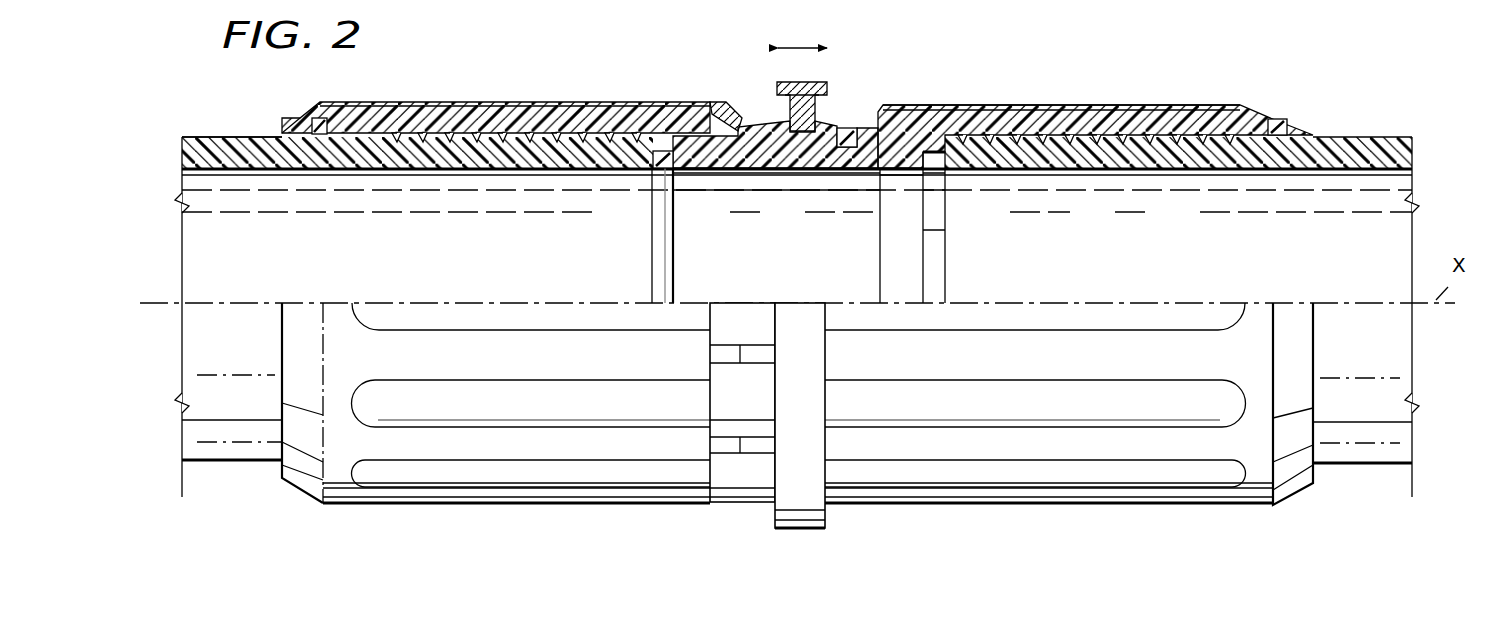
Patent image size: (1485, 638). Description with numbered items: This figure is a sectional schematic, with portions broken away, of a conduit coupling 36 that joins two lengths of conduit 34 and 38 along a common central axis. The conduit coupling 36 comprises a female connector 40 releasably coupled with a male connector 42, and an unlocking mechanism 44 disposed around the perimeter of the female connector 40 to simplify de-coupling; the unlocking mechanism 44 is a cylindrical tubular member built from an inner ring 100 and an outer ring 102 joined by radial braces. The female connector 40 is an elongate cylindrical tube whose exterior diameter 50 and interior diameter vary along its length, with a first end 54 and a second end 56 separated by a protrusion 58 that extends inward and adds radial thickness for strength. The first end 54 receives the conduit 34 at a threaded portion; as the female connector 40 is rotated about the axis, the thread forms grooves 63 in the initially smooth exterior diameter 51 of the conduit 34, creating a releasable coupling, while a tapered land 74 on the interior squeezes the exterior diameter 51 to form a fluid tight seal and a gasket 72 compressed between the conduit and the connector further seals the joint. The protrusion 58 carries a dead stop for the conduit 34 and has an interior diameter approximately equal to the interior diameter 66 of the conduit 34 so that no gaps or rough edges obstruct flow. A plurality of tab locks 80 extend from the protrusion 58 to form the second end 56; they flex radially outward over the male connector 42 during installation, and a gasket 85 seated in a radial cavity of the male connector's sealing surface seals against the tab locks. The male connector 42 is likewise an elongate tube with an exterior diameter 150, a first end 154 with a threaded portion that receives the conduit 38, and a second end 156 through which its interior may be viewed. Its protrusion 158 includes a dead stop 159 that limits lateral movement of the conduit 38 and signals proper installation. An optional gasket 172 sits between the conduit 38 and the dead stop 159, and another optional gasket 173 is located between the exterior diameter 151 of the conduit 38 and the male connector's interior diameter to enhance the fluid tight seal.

The conduit 34 is at (1373, 349).
The conduit coupling 36 is at (982, 60).
The conduit 38 is at (248, 349).
The female connector 40 is at (954, 364).
The male connector 42 is at (596, 364).
The unlocking mechanism 44 is at (800, 531).
The exterior diameter 50 is at (1112, 105).
The exterior diameter 51 is at (1355, 136).
The first end 54 is at (1298, 503).
The second end 56 is at (900, 506).
The protrusion 58 is at (896, 172).
The grooves 63 is at (991, 150).
The interior diameter 66 is at (1398, 173).
The gasket 72 is at (1284, 121).
The land 74 is at (930, 150).
The tab locks 80 is at (731, 110).
The gasket 85 is at (860, 128).
The inner ring 100 is at (834, 118).
The outer ring 102 is at (776, 88).
The exterior diameter 150 is at (465, 100).
The exterior diameter 151 is at (223, 136).
The first end 154 is at (298, 498).
The second end 156 is at (686, 511).
The protrusion 158 is at (778, 173).
The dead stop 159 is at (684, 173).
The gasket 172 is at (660, 160).
The gasket 173 is at (318, 118).